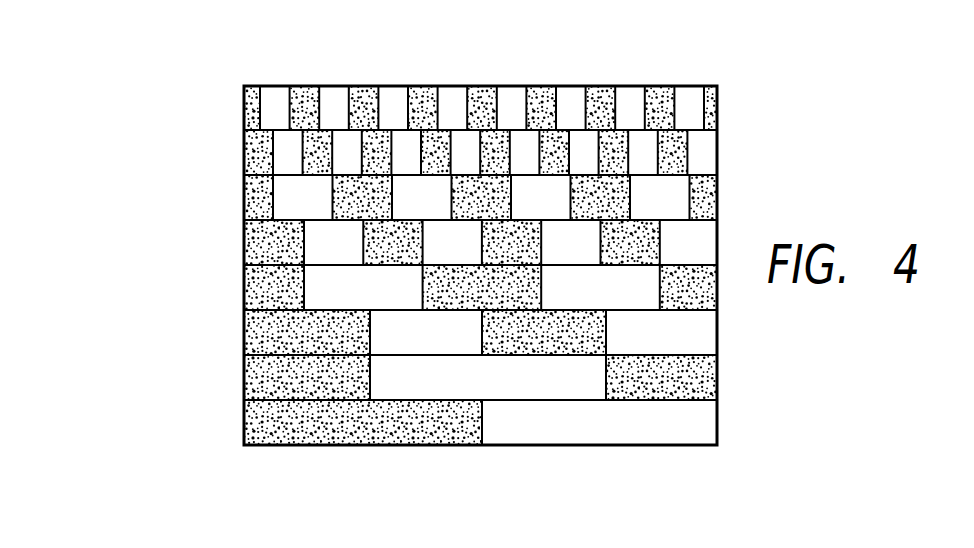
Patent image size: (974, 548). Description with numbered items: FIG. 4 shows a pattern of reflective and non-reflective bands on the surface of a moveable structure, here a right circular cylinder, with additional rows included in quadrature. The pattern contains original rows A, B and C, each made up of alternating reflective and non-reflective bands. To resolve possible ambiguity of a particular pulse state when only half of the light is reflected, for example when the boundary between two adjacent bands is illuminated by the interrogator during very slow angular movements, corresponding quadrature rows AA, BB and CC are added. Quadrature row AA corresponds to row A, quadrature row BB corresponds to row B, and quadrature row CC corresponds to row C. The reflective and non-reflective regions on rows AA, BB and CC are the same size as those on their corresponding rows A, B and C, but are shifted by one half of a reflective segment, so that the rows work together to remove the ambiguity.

The row of reflective and non-reflective bands C is at (232, 197).
The quadrature row CC is at (232, 240).
The row of reflective and non-reflective bands B is at (232, 287).
The quadrature row BB is at (232, 334).
The row of reflective and non-reflective bands A is at (232, 378).
The quadrature row AA is at (232, 423).